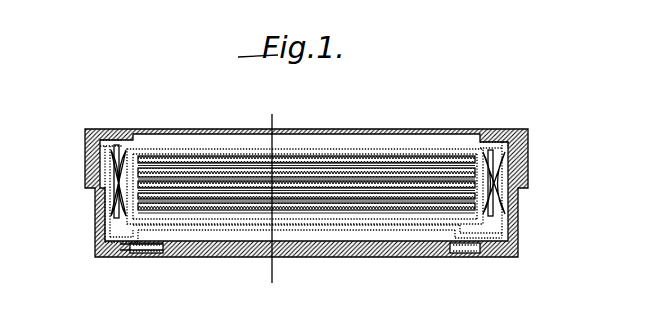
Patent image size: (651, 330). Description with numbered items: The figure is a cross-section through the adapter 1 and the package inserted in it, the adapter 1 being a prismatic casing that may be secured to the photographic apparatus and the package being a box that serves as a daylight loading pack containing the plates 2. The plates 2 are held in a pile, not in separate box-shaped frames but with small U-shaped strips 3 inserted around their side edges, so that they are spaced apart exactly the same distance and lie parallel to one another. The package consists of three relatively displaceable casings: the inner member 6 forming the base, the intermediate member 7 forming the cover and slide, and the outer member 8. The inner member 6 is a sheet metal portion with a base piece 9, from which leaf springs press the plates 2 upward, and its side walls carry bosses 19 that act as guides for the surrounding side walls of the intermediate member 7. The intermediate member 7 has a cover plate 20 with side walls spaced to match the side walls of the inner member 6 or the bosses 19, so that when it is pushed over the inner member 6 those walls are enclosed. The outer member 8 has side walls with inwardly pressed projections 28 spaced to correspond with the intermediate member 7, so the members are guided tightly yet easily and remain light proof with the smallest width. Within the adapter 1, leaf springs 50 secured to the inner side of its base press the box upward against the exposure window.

The adapter 1 is at (322, 257).
The plates 2 is at (196, 150).
The U-shaped strips 3 is at (518, 212).
The inner member 6 is at (128, 217).
The intermediate member 7 is at (123, 258).
The outer member 8 is at (195, 220).
The base piece 9 is at (373, 222).
The bosses 19 is at (65, 208).
The cover plate 20 is at (353, 149).
The inwardly pressed projections 28 is at (88, 184).
The leaf springs 50 is at (147, 236).